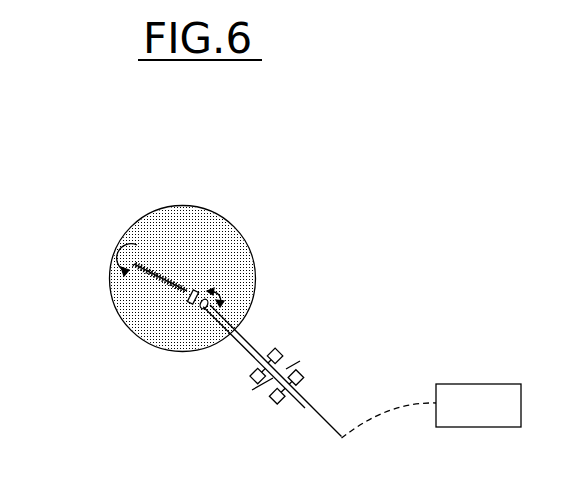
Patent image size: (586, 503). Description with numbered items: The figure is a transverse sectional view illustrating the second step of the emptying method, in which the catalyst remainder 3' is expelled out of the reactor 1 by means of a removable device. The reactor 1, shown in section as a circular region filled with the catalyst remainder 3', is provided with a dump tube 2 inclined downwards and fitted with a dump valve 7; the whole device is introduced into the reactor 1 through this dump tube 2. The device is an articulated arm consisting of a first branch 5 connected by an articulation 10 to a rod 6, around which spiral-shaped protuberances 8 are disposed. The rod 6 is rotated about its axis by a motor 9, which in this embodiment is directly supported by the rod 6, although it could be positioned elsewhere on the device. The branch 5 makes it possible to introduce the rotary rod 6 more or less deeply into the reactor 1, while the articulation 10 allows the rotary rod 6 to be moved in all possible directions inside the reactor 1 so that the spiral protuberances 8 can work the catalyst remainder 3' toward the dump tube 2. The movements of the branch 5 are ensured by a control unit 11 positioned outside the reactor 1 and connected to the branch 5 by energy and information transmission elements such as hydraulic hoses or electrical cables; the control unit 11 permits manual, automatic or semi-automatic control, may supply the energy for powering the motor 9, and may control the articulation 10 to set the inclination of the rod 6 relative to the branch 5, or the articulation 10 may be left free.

The reactor 1 is at (116, 290).
The catalyst remainder 3' is at (169, 270).
The rod 6 is at (137, 245).
The spiral-shaped protuberances 8 is at (192, 299).
The motor 9 is at (194, 294).
The articulation 10 is at (212, 304).
The first branch 5 is at (226, 320).
The dump tube 2 is at (253, 346).
The dump valve 7 is at (258, 392).
The control unit 11 is at (493, 417).